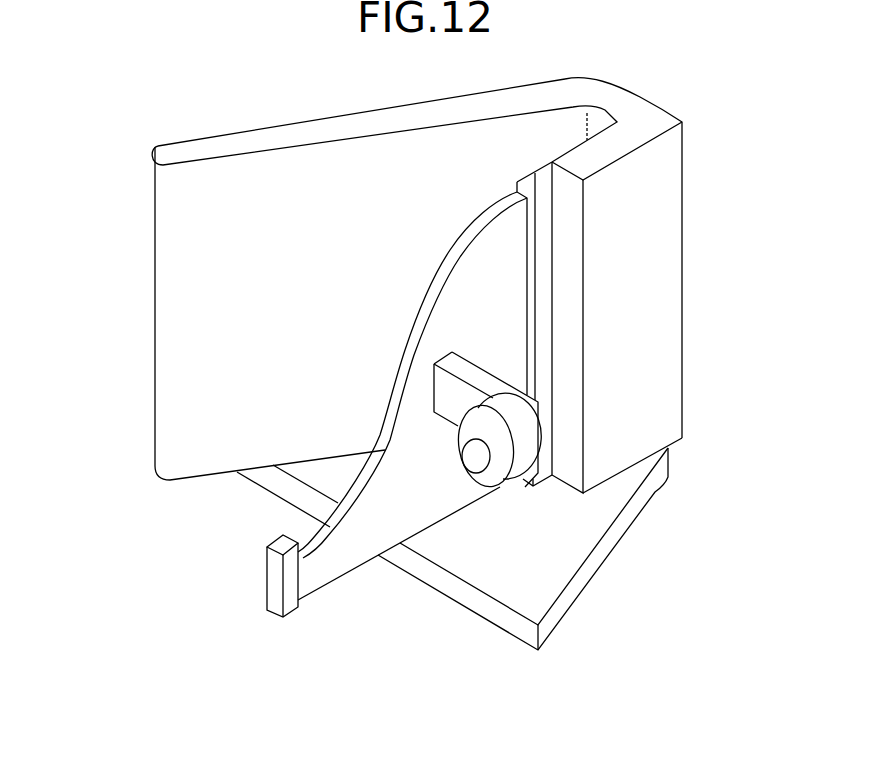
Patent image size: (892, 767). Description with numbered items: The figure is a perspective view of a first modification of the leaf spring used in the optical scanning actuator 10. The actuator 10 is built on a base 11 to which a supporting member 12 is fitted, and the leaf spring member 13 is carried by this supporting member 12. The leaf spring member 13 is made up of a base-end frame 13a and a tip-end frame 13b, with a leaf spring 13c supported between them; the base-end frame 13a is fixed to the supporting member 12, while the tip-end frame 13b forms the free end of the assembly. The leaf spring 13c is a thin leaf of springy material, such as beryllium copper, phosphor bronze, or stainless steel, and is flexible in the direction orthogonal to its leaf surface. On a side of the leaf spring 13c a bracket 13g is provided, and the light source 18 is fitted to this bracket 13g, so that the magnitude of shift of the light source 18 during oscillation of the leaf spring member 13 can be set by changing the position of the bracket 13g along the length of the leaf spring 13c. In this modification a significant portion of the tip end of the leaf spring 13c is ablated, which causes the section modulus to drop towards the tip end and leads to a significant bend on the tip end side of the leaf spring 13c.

The optical scanning actuator 10 is at (110, 131).
The base 11 is at (588, 533).
The supporting member 12 is at (218, 148).
The leaf spring member 13 is at (433, 279).
The base-end frame 13a is at (540, 228).
The tip-end frame 13b is at (273, 557).
The leaf spring 13c is at (407, 470).
The bracket 13g is at (483, 384).
The light source 18 is at (523, 445).